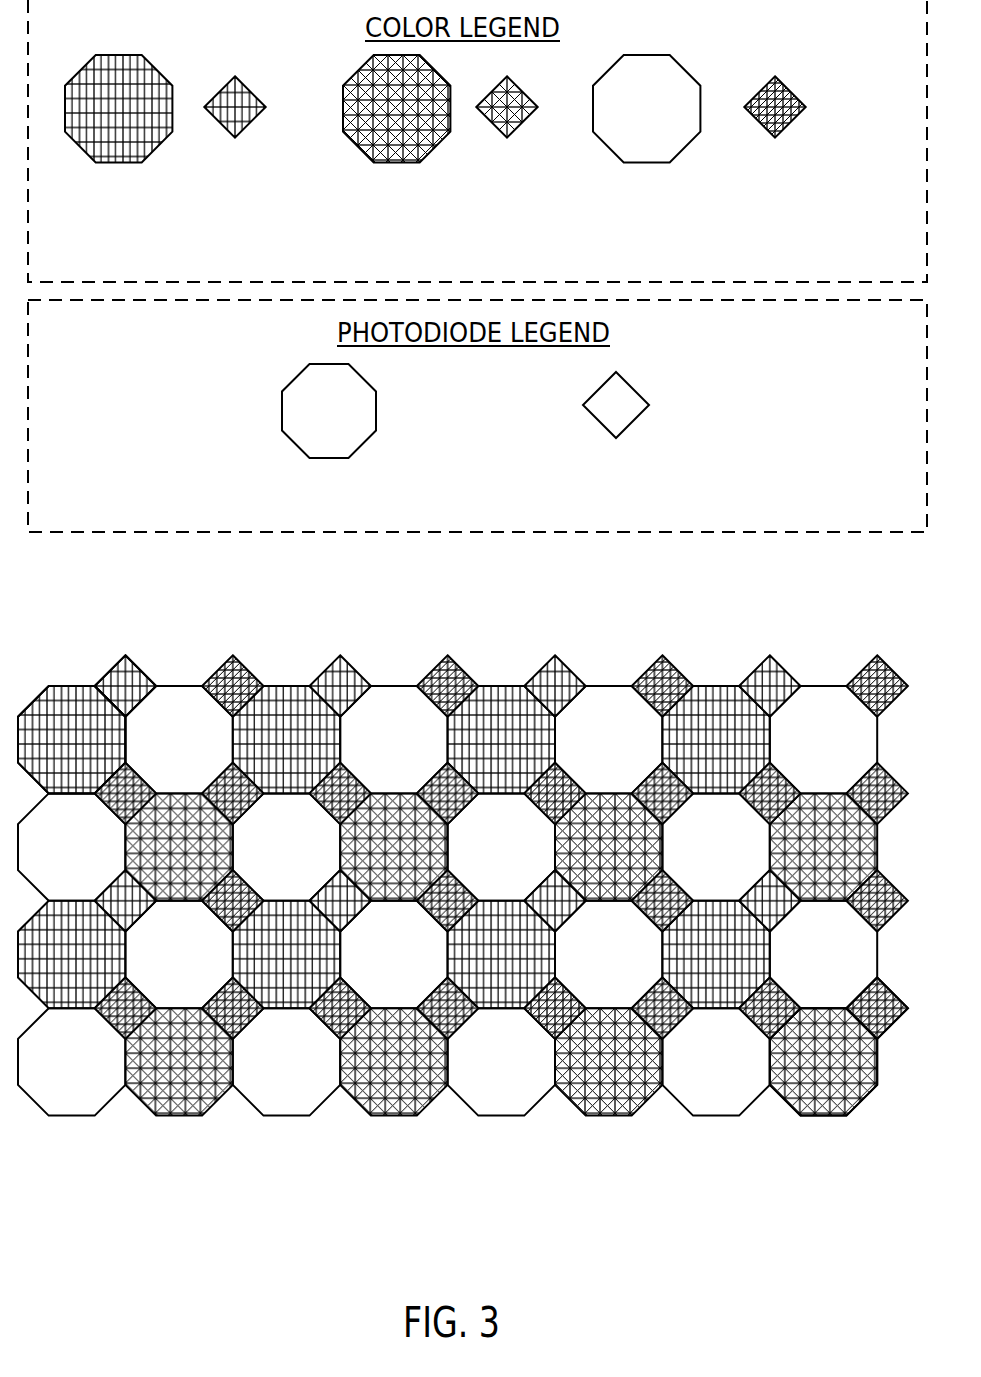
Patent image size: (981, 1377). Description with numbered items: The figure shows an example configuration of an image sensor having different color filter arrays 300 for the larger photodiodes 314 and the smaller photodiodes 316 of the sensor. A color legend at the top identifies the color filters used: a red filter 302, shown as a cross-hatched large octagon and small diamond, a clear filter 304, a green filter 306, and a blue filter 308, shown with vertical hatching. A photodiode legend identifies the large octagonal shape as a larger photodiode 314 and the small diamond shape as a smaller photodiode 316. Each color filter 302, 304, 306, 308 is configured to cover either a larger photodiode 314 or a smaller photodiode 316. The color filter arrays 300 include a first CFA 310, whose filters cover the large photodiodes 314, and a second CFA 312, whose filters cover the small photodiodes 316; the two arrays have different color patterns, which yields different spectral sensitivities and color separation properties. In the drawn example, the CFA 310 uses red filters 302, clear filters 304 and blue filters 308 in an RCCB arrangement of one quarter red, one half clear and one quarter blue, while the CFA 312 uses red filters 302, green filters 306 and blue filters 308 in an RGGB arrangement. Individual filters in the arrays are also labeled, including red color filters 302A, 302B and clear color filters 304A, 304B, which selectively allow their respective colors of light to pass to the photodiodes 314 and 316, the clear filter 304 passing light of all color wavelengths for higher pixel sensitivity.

The color filter arrays 300 is at (476, 907).
The red filter 302 is at (543, 188).
The red color filter 302A is at (72, 686).
The red color filter 302B is at (127, 655).
The clear filter 304 is at (703, 188).
The clear color filter 304A is at (867, 1088).
The clear color filter 304B is at (891, 990).
The green filter 306 is at (823, 172).
The blue filter 308 is at (273, 188).
The CFA 310 is at (93, 753).
The CFA 312 is at (144, 699).
The larger photodiode 314 is at (243, 363).
The smaller photodiode 316 is at (703, 370).